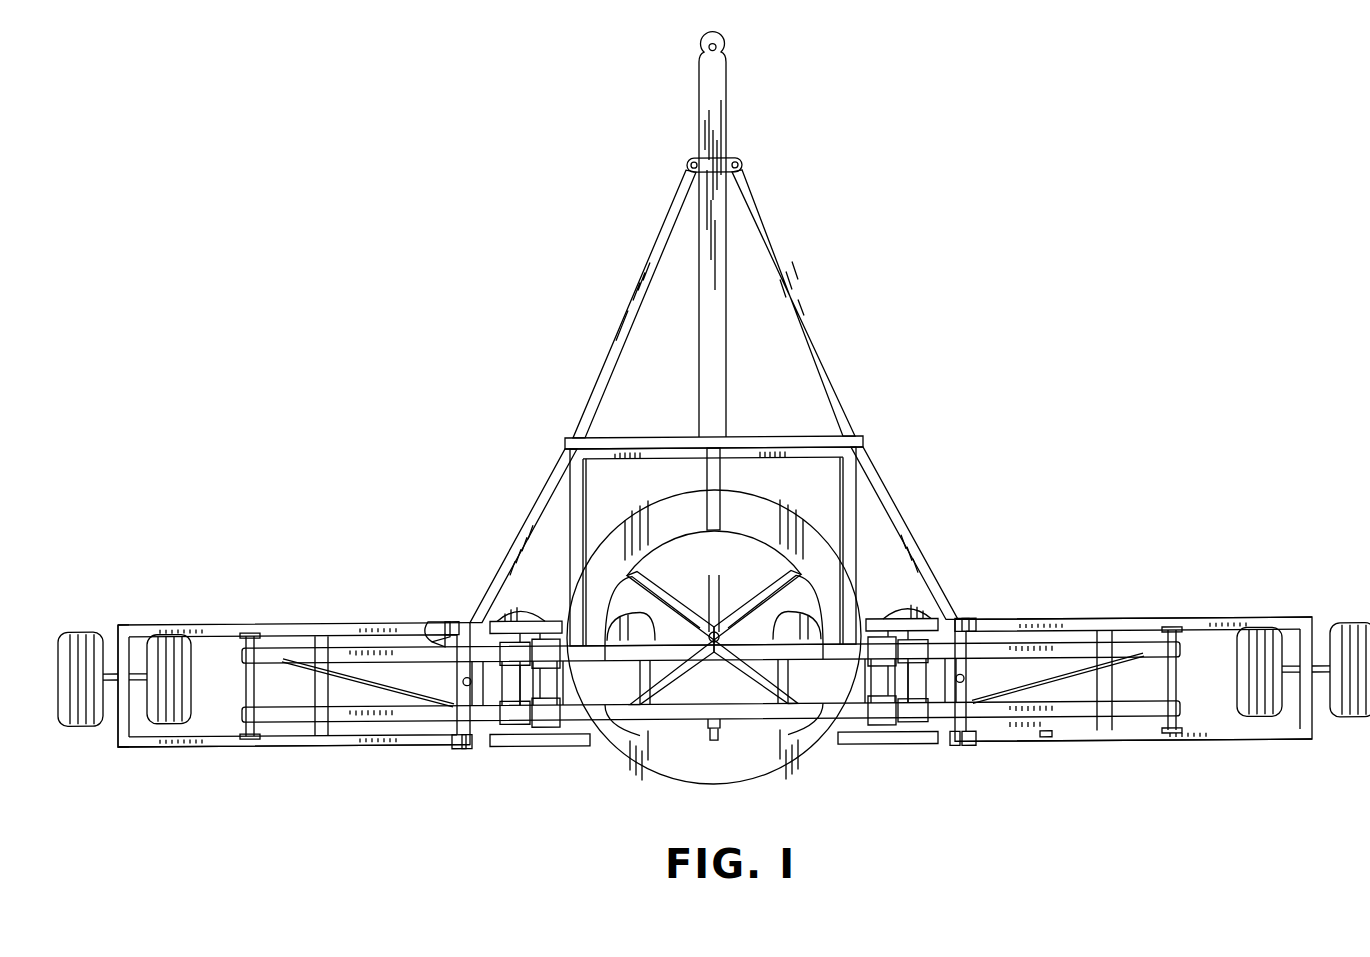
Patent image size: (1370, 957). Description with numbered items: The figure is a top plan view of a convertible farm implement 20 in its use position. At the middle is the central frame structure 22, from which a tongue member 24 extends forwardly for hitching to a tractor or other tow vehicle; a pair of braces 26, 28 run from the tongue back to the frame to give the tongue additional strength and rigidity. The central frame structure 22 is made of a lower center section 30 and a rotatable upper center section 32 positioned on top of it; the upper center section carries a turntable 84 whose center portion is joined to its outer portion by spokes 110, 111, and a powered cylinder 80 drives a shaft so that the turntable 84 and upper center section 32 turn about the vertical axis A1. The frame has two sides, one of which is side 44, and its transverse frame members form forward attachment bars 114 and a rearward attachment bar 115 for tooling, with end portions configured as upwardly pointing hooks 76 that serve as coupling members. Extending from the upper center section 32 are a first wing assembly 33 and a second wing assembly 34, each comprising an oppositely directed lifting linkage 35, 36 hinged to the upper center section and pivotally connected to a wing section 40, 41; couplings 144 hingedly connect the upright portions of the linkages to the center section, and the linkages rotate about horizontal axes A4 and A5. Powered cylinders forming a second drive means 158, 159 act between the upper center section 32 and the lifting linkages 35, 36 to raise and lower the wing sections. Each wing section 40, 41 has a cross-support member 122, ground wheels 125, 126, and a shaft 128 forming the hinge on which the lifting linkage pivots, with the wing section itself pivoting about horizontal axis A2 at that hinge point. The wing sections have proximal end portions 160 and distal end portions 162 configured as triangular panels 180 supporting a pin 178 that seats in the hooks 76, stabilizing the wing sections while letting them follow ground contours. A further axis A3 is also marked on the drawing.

The farm implement 20 is at (828, 246).
The central frame structure 22 is at (746, 436).
The tongue member 24 is at (716, 122).
The brace 26 is at (640, 275).
The brace 28 is at (796, 300).
The lower center section 30 is at (663, 436).
The upper center section 32 is at (616, 455).
The first wing assembly 33 is at (368, 616).
The second wing assembly 34 is at (1012, 606).
The first lifting linkage 35 is at (392, 721).
The second lifting linkage 36 is at (1012, 720).
The first wing section 40 is at (292, 620).
The second wing section 41 is at (1095, 620).
The side 44 is at (524, 619).
The hook 76 is at (448, 748).
The powered cylinder 80 is at (744, 700).
The turntable 84 is at (758, 500).
The spoke 110 is at (660, 580).
The spoke 111 is at (756, 602).
The forward attachment bar 114 is at (838, 436).
The rearward attachment bar 115 is at (276, 746).
The cross-support member 122 is at (322, 694).
The ground wheel 125 is at (84, 630).
The ground wheel 126 is at (186, 648).
The shaft 128 is at (248, 678).
The coupling 144 is at (557, 625).
The second drive means 158 is at (462, 674).
The second drive means 159 is at (966, 676).
The proximal end portion 160 is at (412, 745).
The distal end portion 162 is at (140, 746).
The pin 178 is at (466, 623).
The triangular panel 180 is at (442, 632).
The vertical axis A1 is at (709, 630).
The horizontal axis A2 is at (250, 620).
The axis A3 is at (1172, 615).
The horizontal axis of rotation A4 is at (549, 750).
The horizontal axis of rotation A5 is at (880, 750).